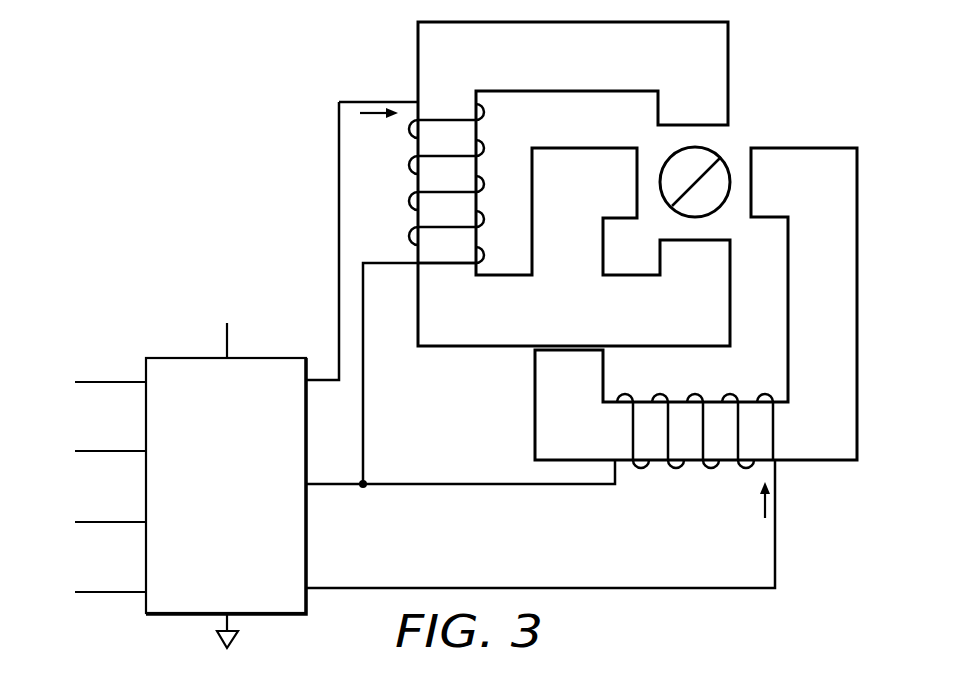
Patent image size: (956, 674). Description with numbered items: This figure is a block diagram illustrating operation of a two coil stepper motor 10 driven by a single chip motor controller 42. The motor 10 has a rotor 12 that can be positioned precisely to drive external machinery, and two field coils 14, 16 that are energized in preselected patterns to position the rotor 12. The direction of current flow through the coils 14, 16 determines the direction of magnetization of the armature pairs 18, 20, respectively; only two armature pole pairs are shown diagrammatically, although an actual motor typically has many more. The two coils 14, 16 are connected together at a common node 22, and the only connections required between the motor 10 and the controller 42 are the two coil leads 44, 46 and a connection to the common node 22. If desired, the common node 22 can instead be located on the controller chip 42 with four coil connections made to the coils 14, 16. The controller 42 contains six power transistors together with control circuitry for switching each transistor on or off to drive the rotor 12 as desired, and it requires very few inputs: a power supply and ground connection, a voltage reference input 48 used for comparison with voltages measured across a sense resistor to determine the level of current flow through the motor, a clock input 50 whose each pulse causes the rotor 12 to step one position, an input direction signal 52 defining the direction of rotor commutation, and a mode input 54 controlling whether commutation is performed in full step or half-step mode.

The stepper motor 10 is at (598, 270).
The rotor 12 is at (727, 152).
The field coil 14 is at (372, 100).
The field coil 16 is at (618, 480).
The armature pair 18 is at (710, 81).
The armature pair 20 is at (837, 195).
The common node 22 is at (366, 482).
The motor controller 42 is at (243, 590).
The coil lead 44 is at (338, 193).
The coil lead 46 is at (660, 587).
The voltage reference input 48 is at (118, 380).
The clock input 50 is at (118, 449).
The input direction signal 52 is at (118, 520).
The mode input 54 is at (118, 590).